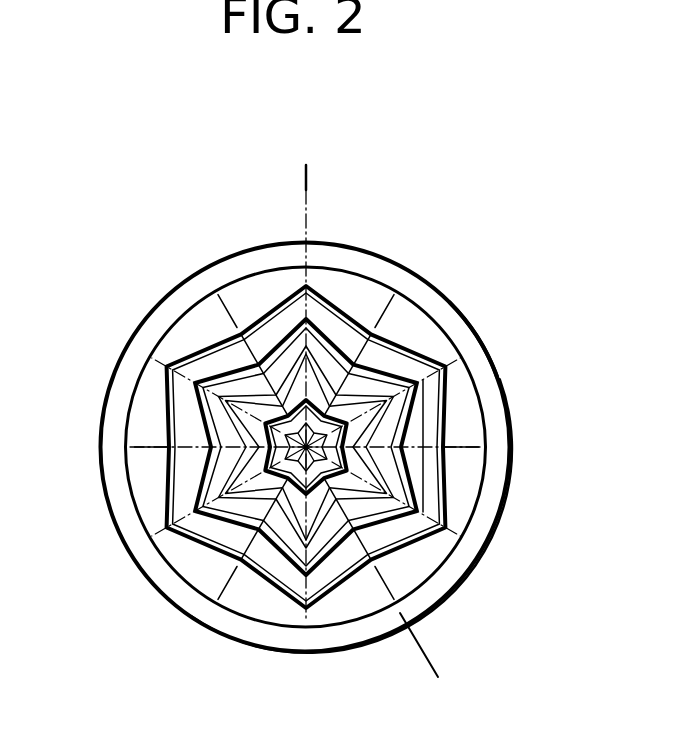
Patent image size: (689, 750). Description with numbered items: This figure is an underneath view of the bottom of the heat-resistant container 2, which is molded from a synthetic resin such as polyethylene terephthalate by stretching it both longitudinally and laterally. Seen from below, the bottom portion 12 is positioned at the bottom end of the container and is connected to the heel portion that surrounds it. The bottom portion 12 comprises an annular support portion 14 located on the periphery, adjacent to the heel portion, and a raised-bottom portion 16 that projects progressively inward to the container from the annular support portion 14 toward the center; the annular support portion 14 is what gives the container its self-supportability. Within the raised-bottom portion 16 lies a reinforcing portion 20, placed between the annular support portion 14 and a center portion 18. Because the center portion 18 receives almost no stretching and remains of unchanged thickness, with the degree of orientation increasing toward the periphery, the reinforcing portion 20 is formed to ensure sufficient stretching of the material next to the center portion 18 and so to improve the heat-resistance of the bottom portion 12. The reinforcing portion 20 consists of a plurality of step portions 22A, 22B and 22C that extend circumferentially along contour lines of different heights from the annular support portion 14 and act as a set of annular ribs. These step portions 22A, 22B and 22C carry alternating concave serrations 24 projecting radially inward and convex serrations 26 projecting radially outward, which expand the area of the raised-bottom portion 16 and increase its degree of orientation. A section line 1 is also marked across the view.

The section line 1 is at (318, 176).
The heat-resistant container 2 is at (505, 246).
The bottom portion 12 is at (505, 378).
The annular support portion 14 is at (492, 498).
The raised-bottom portion 16 is at (275, 603).
The center portion 18 is at (385, 340).
The reinforcing portion 20 is at (358, 303).
The step portion 22A is at (220, 473).
The step portion 22B is at (210, 523).
The step portion 22C is at (207, 570).
The concave serration 24 is at (257, 316).
The convex serration 26 is at (419, 364).